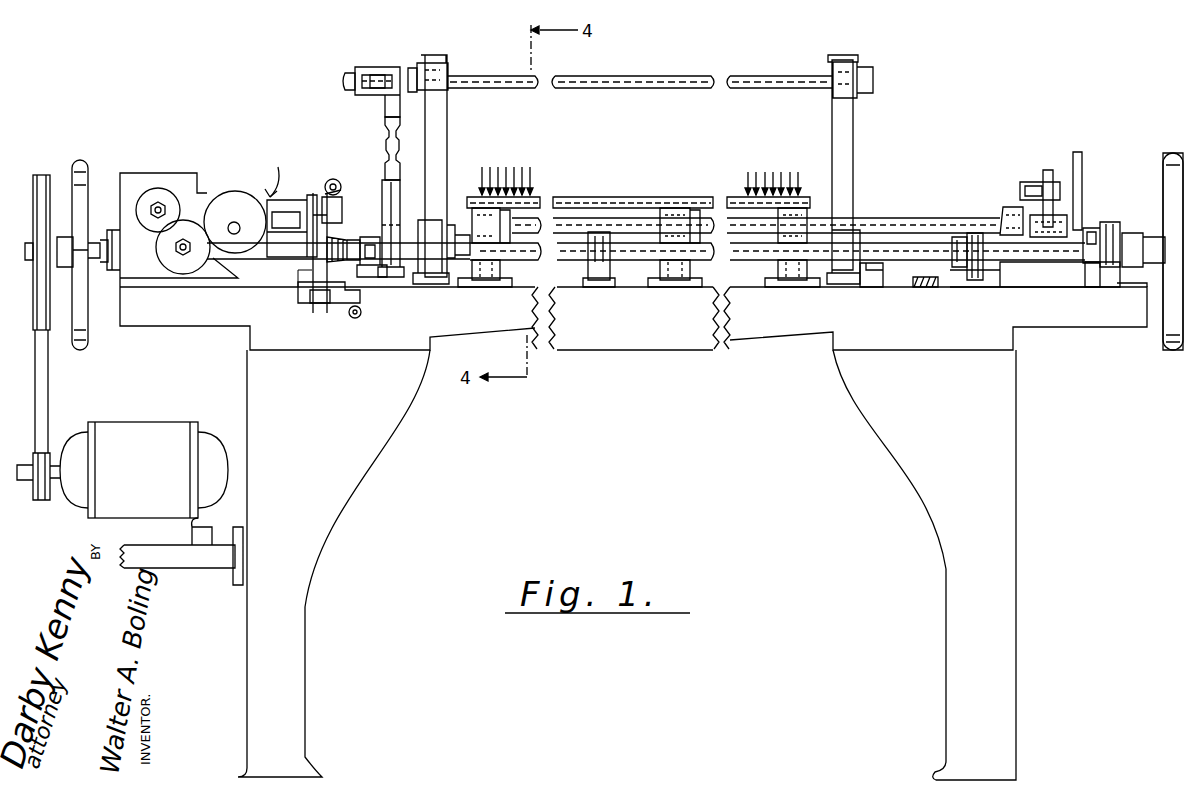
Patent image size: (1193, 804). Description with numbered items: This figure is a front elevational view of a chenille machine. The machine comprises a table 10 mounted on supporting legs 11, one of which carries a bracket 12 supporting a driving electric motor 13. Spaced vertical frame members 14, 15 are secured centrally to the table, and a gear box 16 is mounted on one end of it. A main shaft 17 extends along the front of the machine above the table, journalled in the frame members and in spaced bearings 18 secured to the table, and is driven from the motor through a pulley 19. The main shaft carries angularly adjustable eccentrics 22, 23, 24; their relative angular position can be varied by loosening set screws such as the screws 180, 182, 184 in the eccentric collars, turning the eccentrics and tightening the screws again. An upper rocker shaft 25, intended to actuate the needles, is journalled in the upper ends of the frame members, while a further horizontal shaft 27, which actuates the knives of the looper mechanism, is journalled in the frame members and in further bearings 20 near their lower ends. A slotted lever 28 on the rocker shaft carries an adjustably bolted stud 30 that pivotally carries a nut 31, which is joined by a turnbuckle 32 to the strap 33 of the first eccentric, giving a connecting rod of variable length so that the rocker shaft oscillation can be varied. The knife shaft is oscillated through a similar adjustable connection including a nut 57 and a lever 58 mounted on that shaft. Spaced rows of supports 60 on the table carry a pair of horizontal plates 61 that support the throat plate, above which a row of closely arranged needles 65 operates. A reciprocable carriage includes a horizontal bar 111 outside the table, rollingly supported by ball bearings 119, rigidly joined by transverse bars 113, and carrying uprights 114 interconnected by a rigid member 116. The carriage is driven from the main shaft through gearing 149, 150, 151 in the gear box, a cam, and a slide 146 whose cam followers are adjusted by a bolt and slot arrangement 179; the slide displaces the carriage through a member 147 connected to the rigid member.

The table 10 is at (567, 345).
The supporting legs 11 is at (918, 482).
The bracket 12 is at (202, 560).
The driving electric motor 13 is at (148, 437).
The vertical frame member 14 is at (438, 163).
The vertical frame member 15 is at (845, 138).
The gear box 16 is at (132, 173).
The main shaft 17 is at (525, 270).
The bearings 18 is at (1130, 240).
The pulley 19 is at (47, 175).
The bearings 20 is at (872, 277).
The eccentric 22 is at (402, 267).
The eccentric 23 is at (965, 278).
The eccentric 24 is at (1097, 262).
The upper rocker shaft 25 is at (542, 90).
The horizontal shaft 27 is at (920, 222).
The slotted lever 28 is at (380, 70).
The stud 30 is at (378, 82).
The nut 31 is at (393, 100).
The turnbuckle 32 is at (383, 143).
The strap 33 is at (388, 270).
The nut 57 is at (1035, 182).
The lever 58 is at (1048, 172).
The supports 60 is at (790, 276).
The horizontal plates 61 is at (600, 197).
The needles 65 is at (798, 172).
The horizontal bar 111 is at (343, 297).
The transverse bars 113 is at (920, 282).
The uprights 114 is at (333, 230).
The rigid member 116 is at (330, 210).
The ball bearings 119 is at (355, 320).
The slide 146 is at (273, 171).
The member 147 is at (283, 200).
The gearing 149 is at (165, 195).
The gearing 150 is at (173, 262).
The gearing 151 is at (232, 192).
The bolt and slot arrangement 179 is at (265, 218).
The set screw 180 is at (392, 250).
The set screw 182 is at (963, 250).
The set screw 184 is at (1092, 248).